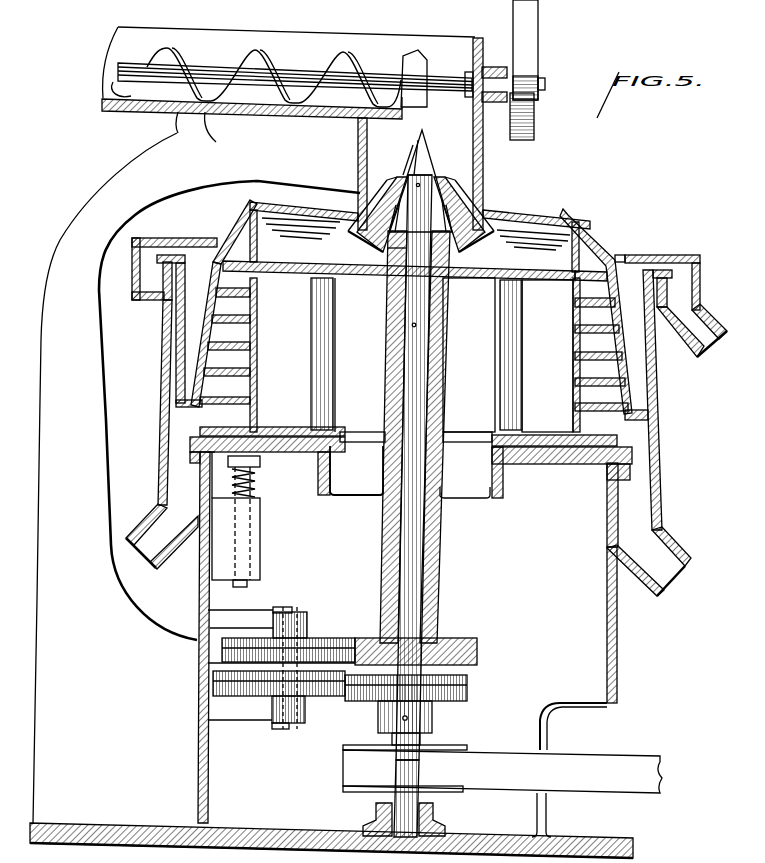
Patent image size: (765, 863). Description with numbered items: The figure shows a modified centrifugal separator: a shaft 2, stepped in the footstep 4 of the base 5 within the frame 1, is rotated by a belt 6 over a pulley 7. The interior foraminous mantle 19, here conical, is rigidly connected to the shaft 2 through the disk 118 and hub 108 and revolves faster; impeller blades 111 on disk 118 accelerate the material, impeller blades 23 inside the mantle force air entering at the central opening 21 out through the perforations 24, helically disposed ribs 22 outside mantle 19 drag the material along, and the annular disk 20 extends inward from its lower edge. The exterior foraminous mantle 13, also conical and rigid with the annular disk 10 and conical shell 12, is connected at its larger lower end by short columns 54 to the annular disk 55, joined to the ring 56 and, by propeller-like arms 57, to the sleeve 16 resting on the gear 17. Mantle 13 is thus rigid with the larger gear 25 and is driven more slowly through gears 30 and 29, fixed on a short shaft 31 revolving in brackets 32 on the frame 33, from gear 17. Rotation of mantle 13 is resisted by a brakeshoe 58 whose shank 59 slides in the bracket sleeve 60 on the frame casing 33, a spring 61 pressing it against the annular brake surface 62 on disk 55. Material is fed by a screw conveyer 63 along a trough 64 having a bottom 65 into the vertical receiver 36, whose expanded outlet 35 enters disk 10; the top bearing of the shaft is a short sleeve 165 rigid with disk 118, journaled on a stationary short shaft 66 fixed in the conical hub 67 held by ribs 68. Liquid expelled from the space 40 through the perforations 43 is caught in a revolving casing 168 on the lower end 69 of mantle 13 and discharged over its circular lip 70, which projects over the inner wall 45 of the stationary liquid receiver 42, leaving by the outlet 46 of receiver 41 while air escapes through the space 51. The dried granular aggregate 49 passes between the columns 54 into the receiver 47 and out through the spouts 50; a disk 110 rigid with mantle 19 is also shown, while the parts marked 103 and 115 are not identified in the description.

The frame 1 is at (102, 177).
The shaft 2 is at (440, 335).
The footstep 4 is at (421, 815).
The base 5 is at (280, 836).
The belt 6 is at (569, 760).
The pulley 7 is at (456, 746).
The annular disk 10 is at (562, 216).
The conical shell 12 is at (592, 233).
The exterior foraminous mantle 13 is at (625, 345).
The sleeve 16 is at (438, 546).
The gear 17 is at (467, 691).
The interior foraminous mantle 19 is at (257, 293).
The annular disk 20 is at (533, 435).
The central opening 21 is at (455, 434).
The helically disposed ribs 22 is at (595, 270).
The impeller blades 23 is at (495, 358).
The perforations 24 is at (600, 350).
The larger gear 25 is at (478, 658).
The gear 29 is at (215, 678).
The gear 30 is at (224, 645).
The short shaft 31 is at (287, 612).
The brackets 32 is at (306, 620).
The frame casing 33 is at (616, 676).
The expanded outlet 35 is at (350, 205).
The vertical receiver 36 is at (482, 148).
The space 40 is at (225, 330).
The receiver 41 is at (703, 290).
The stationary liquid receiver 42 is at (685, 282).
The perforations 43 is at (632, 383).
The inner wall 45 is at (667, 287).
The outlet 46 is at (712, 323).
The downward extension 47 is at (663, 451).
The granular aggregate 49 is at (640, 503).
The spout 50 is at (675, 556).
The space 51 is at (220, 260).
The short columns 54 is at (197, 413).
The annular disk 55 is at (519, 460).
The ring 56 is at (318, 487).
The arms 57 is at (468, 490).
The brakeshoe 58 is at (263, 465).
The shank 59 is at (250, 520).
The bracket sleeve 60 is at (260, 543).
The spring 61 is at (253, 483).
The annular brake surface 62 is at (254, 437).
The screw conveyer 63 is at (248, 48).
The trough 64 is at (360, 35).
The bottom 65 is at (234, 113).
The stationary short shaft 66 is at (430, 192).
The conical hub 67 is at (470, 210).
The ribs 68 is at (455, 185).
The lower end 69 is at (650, 418).
The circular lip 70 is at (666, 257).
The chamber 103 is at (445, 280).
The hub 108 is at (395, 312).
The disk 110 is at (302, 203).
The impeller blades 111 is at (251, 205).
The bottom plate 115 is at (192, 448).
The disk 118 is at (532, 281).
The short sleeve 165 is at (390, 249).
The revolving casing 168 is at (217, 338).